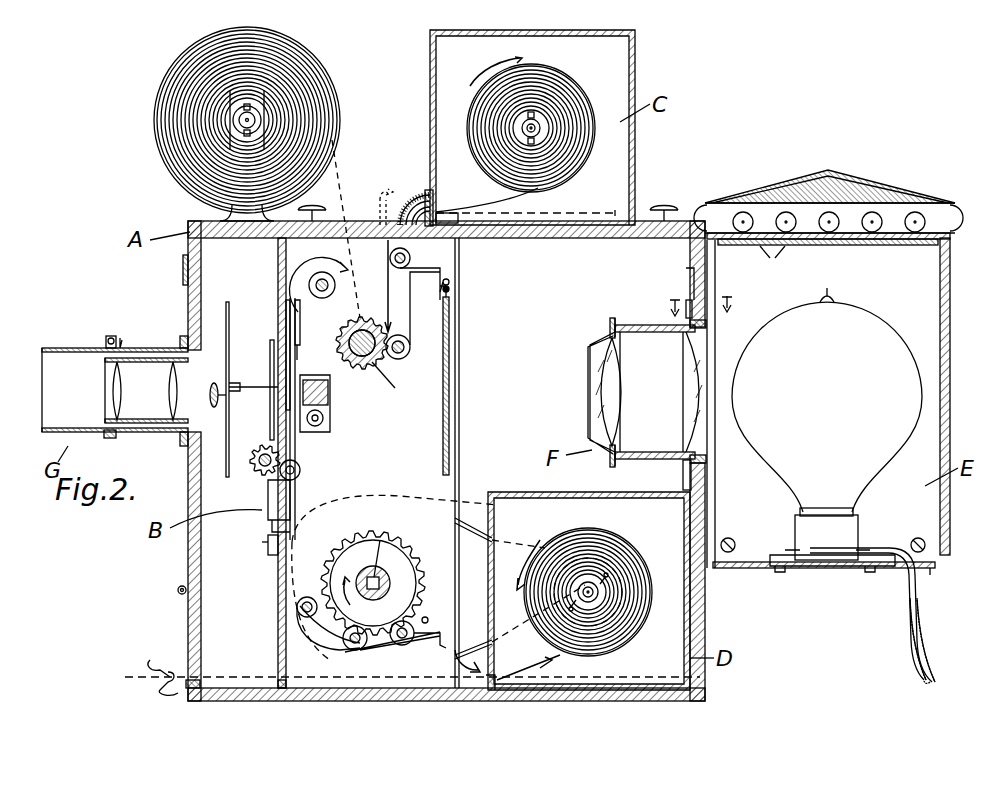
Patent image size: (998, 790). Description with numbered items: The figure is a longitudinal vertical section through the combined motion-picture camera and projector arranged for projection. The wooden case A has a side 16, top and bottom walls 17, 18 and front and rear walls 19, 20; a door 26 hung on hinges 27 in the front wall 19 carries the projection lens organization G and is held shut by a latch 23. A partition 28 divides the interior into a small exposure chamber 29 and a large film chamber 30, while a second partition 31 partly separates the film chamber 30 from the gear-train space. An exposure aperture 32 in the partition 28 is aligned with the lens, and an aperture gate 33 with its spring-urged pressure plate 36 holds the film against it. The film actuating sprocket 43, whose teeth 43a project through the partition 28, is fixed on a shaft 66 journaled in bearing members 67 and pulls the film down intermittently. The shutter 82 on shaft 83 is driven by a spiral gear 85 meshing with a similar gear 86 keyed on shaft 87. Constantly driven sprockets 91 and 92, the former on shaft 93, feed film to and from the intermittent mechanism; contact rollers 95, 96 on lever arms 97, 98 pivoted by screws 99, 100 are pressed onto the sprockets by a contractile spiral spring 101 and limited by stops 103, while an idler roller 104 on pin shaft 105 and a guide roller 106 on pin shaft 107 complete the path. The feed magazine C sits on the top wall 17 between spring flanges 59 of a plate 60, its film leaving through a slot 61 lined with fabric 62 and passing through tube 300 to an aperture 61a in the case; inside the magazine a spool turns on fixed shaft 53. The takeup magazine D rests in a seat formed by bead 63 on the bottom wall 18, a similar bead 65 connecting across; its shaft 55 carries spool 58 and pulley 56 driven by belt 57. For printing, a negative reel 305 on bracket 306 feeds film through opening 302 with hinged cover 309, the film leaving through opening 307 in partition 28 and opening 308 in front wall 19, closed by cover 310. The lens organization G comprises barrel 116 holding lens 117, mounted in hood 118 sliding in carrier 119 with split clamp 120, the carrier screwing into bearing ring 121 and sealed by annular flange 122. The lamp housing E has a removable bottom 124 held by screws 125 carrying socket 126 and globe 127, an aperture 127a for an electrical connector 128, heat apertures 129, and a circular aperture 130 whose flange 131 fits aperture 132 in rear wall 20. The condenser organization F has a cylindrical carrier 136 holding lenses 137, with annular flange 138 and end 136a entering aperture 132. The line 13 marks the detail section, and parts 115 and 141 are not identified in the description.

The aperture plate 13 is at (676, 297).
The side 16 is at (565, 271).
The top wall 17 is at (532, 238).
The bottom wall 18 is at (360, 700).
The front wall 19 is at (190, 558).
The rear wall 20 is at (705, 620).
The latch 23 is at (190, 278).
The door 26 is at (278, 280).
The hinges 27 is at (180, 596).
The partition 28 is at (290, 575).
The exposure chamber 29 is at (311, 570).
The film chamber 30 is at (395, 469).
The partition 31 is at (460, 460).
The exposure aperture 32 is at (272, 360).
The aperture gate 33 is at (300, 465).
The pressure plate 36 is at (285, 320).
The film actuating sprocket 43 is at (268, 480).
The teeth 43a is at (270, 508).
The shaft 53 is at (540, 135).
The shaft 55 is at (592, 600).
The pulley 56 is at (612, 562).
The belt 57 is at (470, 518).
The spool 58 is at (606, 600).
The spring flanges 59 is at (597, 213).
The plate 60 is at (412, 178).
The slot 61 is at (426, 195).
The aperture 61a is at (448, 226).
The fabric 62 is at (415, 200).
The bead 63 is at (490, 690).
The bead 65 is at (688, 285).
The shaft 66 is at (265, 453).
The bearing members 67 is at (268, 545).
The shutter 82 is at (262, 333).
The shaft 83 is at (250, 385).
The spiral gear 85 is at (328, 392).
The roller 86 is at (323, 418).
The shaft 87 is at (330, 430).
The sprocket 91 is at (385, 372).
The sprocket 92 is at (426, 538).
The shaft 93 is at (362, 318).
The contact roller 95 is at (404, 358).
The contact roller 96 is at (402, 646).
The lever arm 97 is at (420, 318).
The lever arm 98 is at (436, 648).
The pivot screw 99 is at (410, 260).
The pivot screw 100 is at (306, 597).
The contractile spiral spring 101 is at (450, 410).
The stops 103 is at (442, 288).
The contact roller 104 is at (352, 650).
The pin shaft 105 is at (345, 652).
The idler roller 106 is at (335, 282).
The pin shaft 107 is at (316, 292).
The knob 115 is at (214, 412).
The lens mounting 116 is at (142, 356).
The lens 117 is at (116, 392).
The tubular hood member 118 is at (85, 348).
The tubular carrier 119 is at (122, 338).
The split clamp 120 is at (108, 336).
The bearing ring 121 is at (192, 342).
The annular flange 122 is at (184, 446).
The removable bottom 124 is at (930, 576).
The screws 125 is at (946, 350).
The socket 126 is at (820, 556).
The light globe 127 is at (827, 400).
The aperture 127a is at (905, 575).
The cable 128 is at (912, 626).
The apertures 129 is at (828, 255).
The circular aperture 130 is at (712, 340).
The flange 131 is at (716, 325).
The aperture 132 is at (690, 322).
The cylindrical carrier member 136 is at (625, 325).
The end 136a is at (706, 460).
The lenses 137 is at (690, 358).
The annular flange 138 is at (686, 478).
The collar 141 is at (170, 434).
The tube 300 is at (383, 205).
The opening 302 is at (330, 250).
The reel 305 is at (200, 45).
The bracket 306 is at (225, 214).
The opening 307 is at (278, 680).
The opening 308 is at (194, 700).
The cover 309 is at (356, 200).
The cover 310 is at (185, 684).